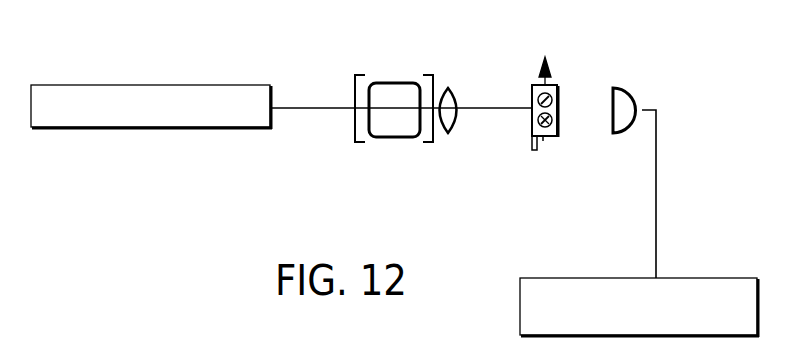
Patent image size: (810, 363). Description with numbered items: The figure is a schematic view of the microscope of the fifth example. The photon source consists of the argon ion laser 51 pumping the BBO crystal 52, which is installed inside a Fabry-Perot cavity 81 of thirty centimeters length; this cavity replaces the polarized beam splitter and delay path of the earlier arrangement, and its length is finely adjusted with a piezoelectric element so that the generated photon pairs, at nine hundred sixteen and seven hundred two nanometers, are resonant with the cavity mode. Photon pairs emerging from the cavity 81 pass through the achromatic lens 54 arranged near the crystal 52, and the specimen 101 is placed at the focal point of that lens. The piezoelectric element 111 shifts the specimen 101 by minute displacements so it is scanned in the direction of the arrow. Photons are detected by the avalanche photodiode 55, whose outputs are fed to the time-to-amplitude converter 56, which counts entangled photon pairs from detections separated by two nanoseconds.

The argon ion laser 51 is at (132, 85).
The BBO crystal 52 is at (392, 83).
The Fabry-Perot cavity 81 is at (353, 130).
The achromatic lens 54 is at (446, 134).
The specimen 101 is at (553, 137).
The piezoelectric element 111 is at (533, 150).
The avalanche photodiode 55 is at (628, 88).
The time-to-amplitude converter 56 is at (730, 278).